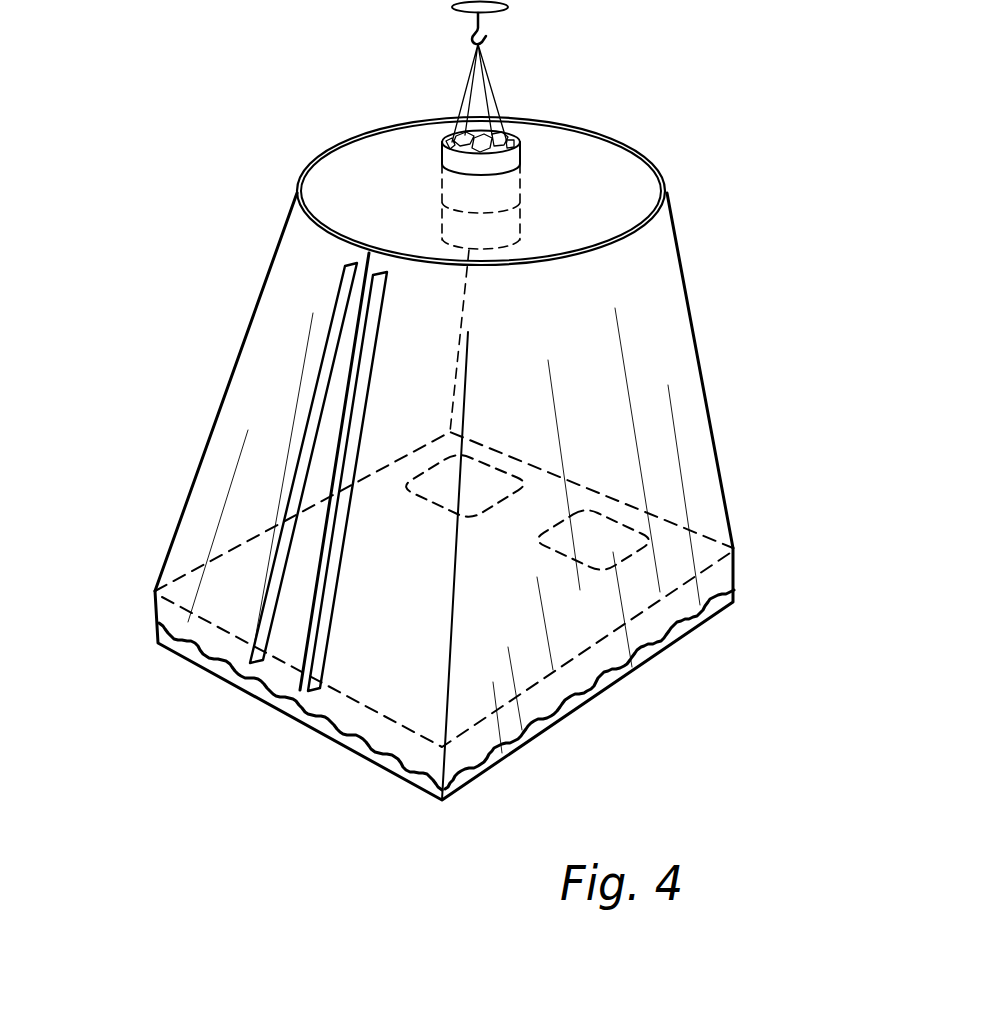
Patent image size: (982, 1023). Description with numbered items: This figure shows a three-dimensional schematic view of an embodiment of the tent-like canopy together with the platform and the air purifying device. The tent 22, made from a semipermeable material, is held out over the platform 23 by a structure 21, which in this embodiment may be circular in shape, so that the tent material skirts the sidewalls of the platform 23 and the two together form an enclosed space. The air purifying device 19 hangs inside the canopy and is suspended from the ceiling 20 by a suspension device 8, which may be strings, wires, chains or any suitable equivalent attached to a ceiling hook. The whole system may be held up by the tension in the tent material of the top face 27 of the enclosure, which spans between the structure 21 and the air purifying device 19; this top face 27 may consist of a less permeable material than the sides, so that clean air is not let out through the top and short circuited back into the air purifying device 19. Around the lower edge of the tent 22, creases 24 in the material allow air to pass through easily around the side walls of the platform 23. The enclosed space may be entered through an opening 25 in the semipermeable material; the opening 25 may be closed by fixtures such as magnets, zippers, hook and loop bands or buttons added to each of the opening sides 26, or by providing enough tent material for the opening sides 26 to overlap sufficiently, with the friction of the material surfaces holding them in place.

The suspension device 8 is at (497, 97).
The air purifying device 19 is at (443, 183).
The ceiling 20 is at (510, 6).
The structure 21 is at (665, 176).
The tent 22 is at (300, 275).
The platform 23 is at (200, 653).
The creases 24 is at (698, 617).
The opening 25 is at (287, 612).
The opening sides 26 is at (367, 363).
The top face 27 is at (607, 204).